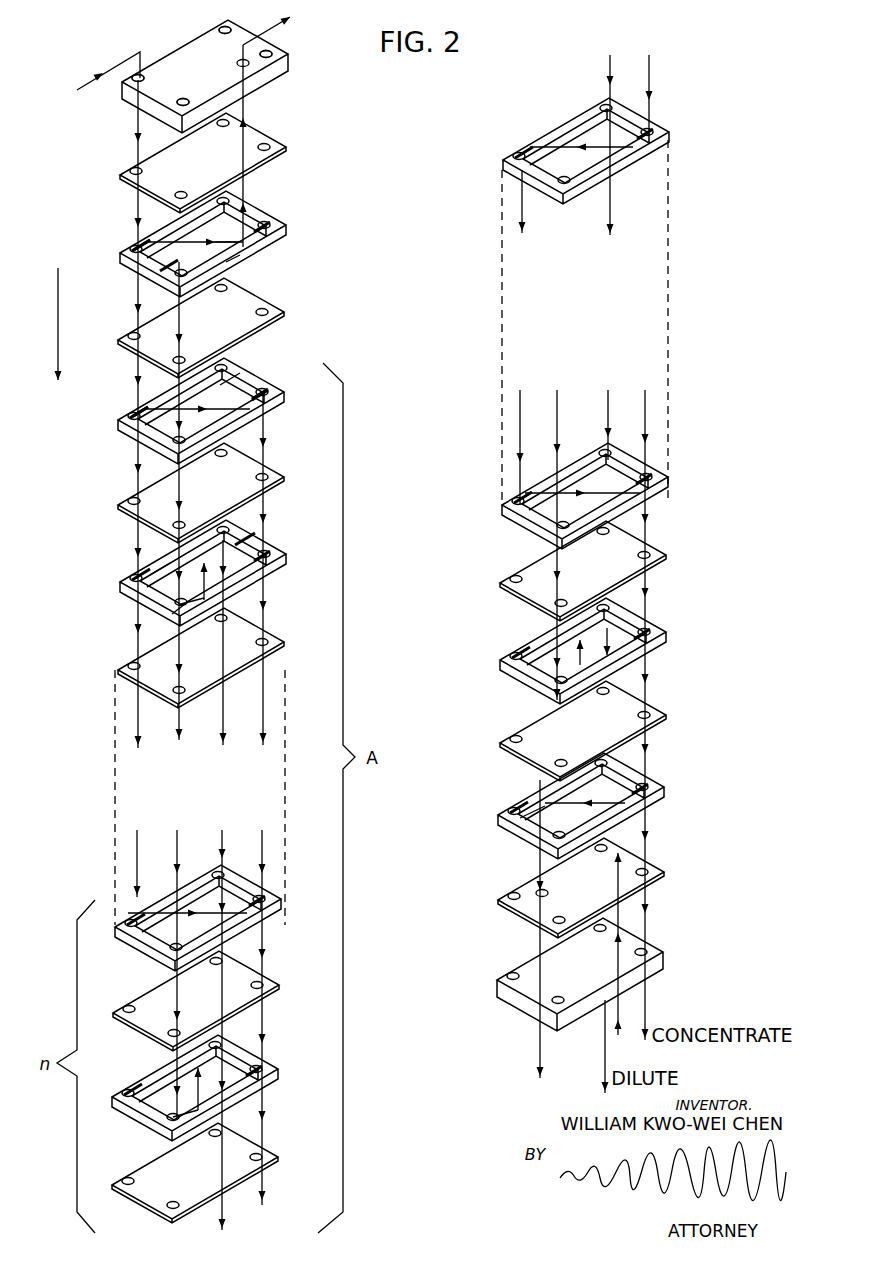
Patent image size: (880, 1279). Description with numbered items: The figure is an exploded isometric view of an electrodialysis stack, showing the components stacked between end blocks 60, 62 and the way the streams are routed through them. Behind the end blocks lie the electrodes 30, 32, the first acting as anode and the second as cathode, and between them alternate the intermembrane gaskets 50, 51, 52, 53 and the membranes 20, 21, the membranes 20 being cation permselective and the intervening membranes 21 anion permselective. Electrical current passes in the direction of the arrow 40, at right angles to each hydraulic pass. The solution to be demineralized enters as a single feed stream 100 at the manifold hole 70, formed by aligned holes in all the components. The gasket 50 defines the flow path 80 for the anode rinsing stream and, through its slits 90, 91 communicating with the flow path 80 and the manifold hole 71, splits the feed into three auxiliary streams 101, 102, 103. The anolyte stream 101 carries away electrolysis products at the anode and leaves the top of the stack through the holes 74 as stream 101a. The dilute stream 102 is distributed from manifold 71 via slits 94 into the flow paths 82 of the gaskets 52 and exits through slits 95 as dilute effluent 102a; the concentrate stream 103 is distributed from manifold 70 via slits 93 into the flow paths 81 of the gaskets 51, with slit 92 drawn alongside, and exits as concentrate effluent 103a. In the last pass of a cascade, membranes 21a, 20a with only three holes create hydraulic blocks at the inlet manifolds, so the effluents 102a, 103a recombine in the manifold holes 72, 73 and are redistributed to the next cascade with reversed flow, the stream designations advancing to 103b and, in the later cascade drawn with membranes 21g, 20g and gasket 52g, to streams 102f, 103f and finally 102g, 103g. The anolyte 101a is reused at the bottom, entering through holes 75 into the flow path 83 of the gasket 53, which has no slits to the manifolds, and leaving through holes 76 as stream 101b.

The cation permselective membrane 20 is at (268, 313).
The cation membrane with three holes 20a is at (270, 1162).
The membrane plate 20g is at (655, 722).
The anion permselective membrane 21 is at (275, 485).
The anion membrane with three holes 21a is at (270, 1002).
The membrane plate 21g is at (655, 568).
The electrode 30 is at (280, 145).
The electrode 32 is at (655, 892).
The arrow 40 is at (58, 352).
The intermembrane gasket 50 is at (275, 236).
The intermembrane gasket 51 is at (270, 425).
The intermembrane gasket 52 is at (262, 552).
The spacer frame 52g is at (655, 640).
The intermembrane gasket 53 is at (640, 782).
The end block 60 is at (275, 75).
The end block 62 is at (655, 993).
The manifold hole 70 is at (140, 76).
The manifold hole 71 is at (185, 100).
The dilute stream manifold hole 72 is at (222, 32).
The concentrate stream manifold hole 73 is at (272, 55).
The hole 74 is at (238, 64).
The hole 75 is at (616, 895).
The hole 76 is at (546, 894).
The flow path 80 is at (232, 266).
The flow path 81 is at (245, 378).
The flow path 82 is at (165, 562).
The flow path 83 is at (530, 822).
The slit 90 is at (140, 250).
The slit 91 is at (175, 280).
The slot 92 is at (143, 415).
The slit 93 is at (266, 404).
The slit 94 is at (180, 614).
The slit 95 is at (258, 530).
The feed stream 100 is at (138, 120).
The anolyte stream 101 is at (240, 253).
The anolyte stream effluent 101a is at (255, 48).
The catholyte effluent stream 101b is at (540, 1050).
The dilute stream 102 is at (163, 268).
The dilute stream effluent 102a is at (230, 630).
The stream 102f is at (557, 432).
The dilute stream effluent 102g is at (608, 412).
The concentrate stream 103 is at (136, 295).
The concentrate stream effluent 103a is at (266, 445).
The concentrate stream effluent 103b is at (522, 220).
The stream 103f is at (520, 412).
The concentrate stream effluent 103g is at (645, 412).